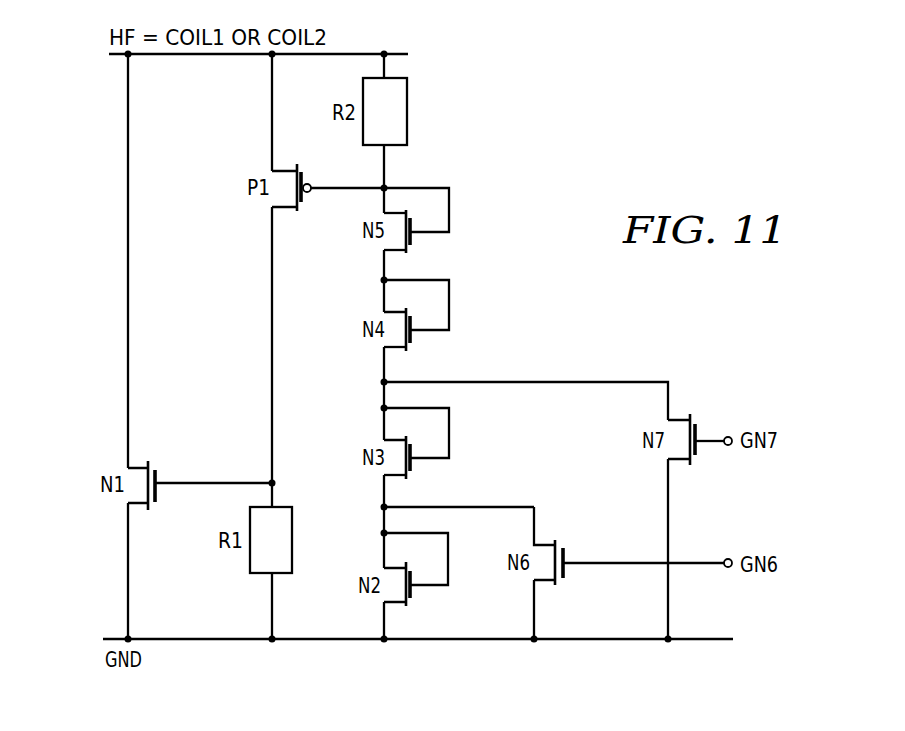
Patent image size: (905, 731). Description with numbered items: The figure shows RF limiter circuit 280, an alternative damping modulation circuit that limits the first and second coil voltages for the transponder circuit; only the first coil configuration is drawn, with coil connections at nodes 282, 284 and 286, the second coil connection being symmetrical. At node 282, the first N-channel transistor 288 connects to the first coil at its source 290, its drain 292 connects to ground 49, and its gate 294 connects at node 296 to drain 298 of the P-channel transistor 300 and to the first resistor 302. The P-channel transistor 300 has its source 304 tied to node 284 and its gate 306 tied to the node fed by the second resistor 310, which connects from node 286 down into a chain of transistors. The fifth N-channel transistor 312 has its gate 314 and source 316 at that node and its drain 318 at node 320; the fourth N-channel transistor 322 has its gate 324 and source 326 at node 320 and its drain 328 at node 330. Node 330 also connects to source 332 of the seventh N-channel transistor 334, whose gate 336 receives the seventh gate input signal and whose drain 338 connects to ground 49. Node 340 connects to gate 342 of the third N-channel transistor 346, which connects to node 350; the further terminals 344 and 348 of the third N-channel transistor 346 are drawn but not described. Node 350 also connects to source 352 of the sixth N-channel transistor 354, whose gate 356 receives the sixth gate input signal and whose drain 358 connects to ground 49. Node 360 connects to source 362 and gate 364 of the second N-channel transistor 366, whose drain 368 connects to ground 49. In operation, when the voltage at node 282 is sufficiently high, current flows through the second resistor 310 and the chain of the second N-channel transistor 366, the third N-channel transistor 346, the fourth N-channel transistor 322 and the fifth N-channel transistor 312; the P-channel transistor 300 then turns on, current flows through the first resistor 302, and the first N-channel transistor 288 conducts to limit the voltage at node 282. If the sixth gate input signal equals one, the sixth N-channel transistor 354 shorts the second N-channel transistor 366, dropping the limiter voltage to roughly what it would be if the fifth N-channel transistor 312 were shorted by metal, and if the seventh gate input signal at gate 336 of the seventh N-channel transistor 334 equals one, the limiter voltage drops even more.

The ground 49 is at (205, 643).
The RF limiter circuit 280 is at (556, 153).
The node 282 is at (126, 59).
The node 284 is at (270, 59).
The node 286 is at (386, 51).
The N1 transistor 288 is at (114, 504).
The source 290 is at (126, 356).
The drain 292 is at (126, 601).
The gate 294 is at (182, 481).
The node 296 is at (268, 480).
The drain 298 is at (270, 303).
The P1 transistor 300 is at (264, 206).
The R1 resistor 302 is at (388, 184).
The source 304 is at (270, 108).
The gate 306 is at (340, 186).
The R2 resistor 310 is at (408, 110).
The N5 transistor 312 is at (422, 245).
The gate 314 is at (450, 200).
The source 316 is at (383, 202).
The drain 318 is at (383, 250).
The node 320 is at (383, 280).
The N4 transistor 322 is at (422, 340).
The gate 324 is at (450, 306).
The source 326 is at (383, 312).
The drain 328 is at (383, 347).
The node 330 is at (383, 382).
The source 332 is at (670, 389).
The N7 transistor 334 is at (711, 421).
The gate 336 is at (730, 448).
The drain 338 is at (670, 515).
The node 340 is at (383, 408).
The gate 342 is at (450, 416).
The drain line 344 is at (383, 440).
The N3 transistor 346 is at (422, 467).
The source line 348 is at (383, 475).
The node 350 is at (383, 507).
The source 352 is at (536, 530).
The N6 transistor 354 is at (577, 546).
The gate 356 is at (730, 570).
The drain 358 is at (536, 606).
The node 360 is at (383, 533).
The source 362 is at (383, 567).
The gate 364 is at (450, 543).
The N2 transistor 366 is at (422, 594).
The drain 368 is at (378, 617).